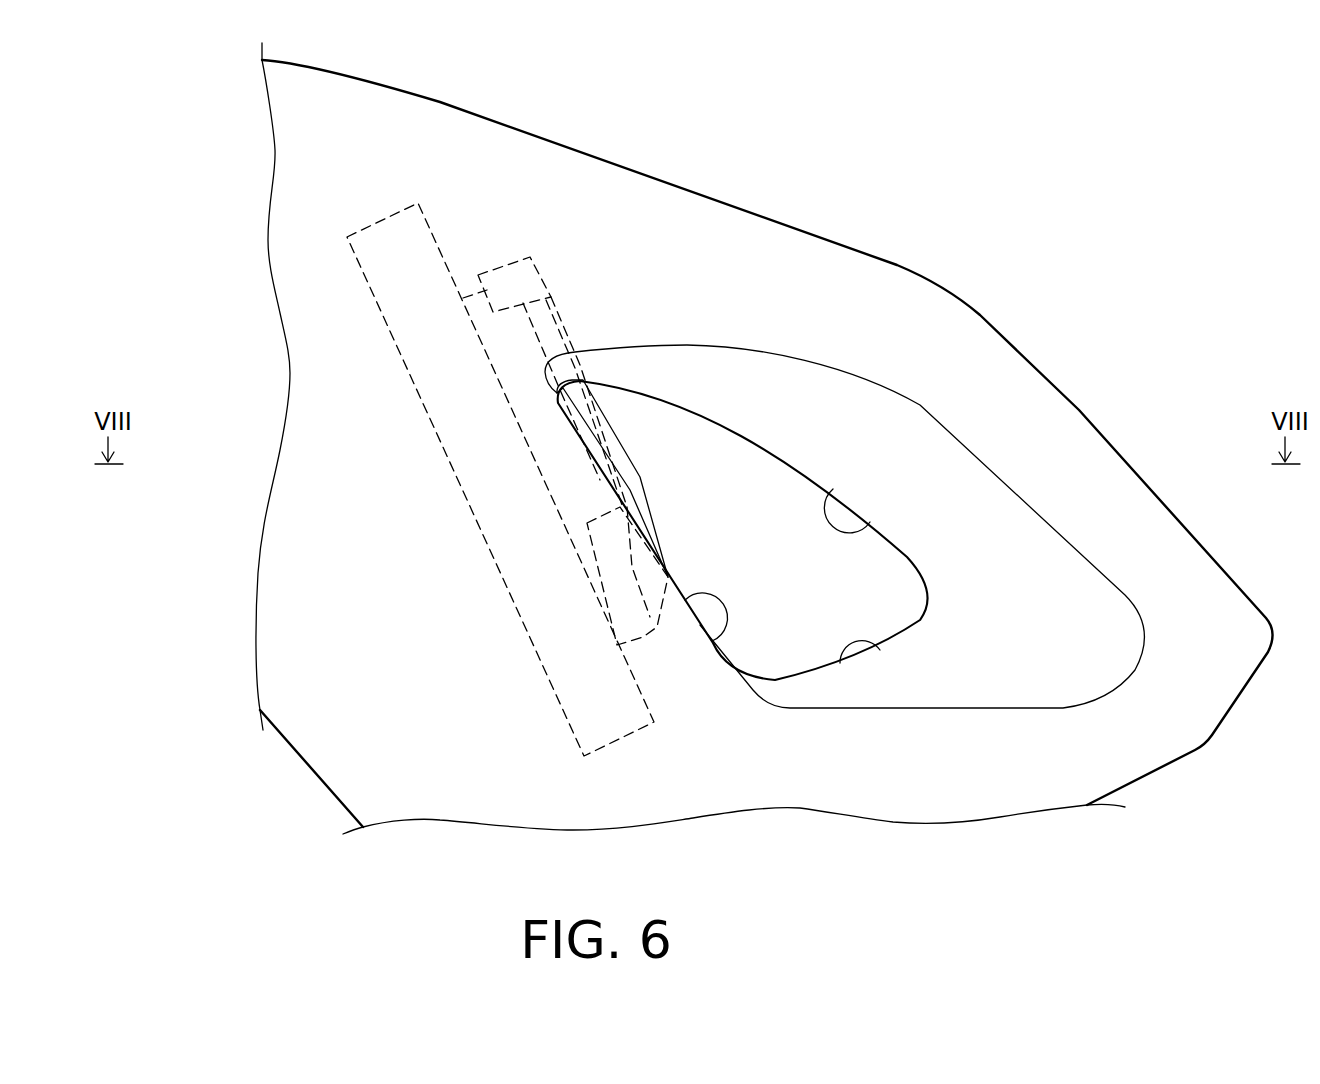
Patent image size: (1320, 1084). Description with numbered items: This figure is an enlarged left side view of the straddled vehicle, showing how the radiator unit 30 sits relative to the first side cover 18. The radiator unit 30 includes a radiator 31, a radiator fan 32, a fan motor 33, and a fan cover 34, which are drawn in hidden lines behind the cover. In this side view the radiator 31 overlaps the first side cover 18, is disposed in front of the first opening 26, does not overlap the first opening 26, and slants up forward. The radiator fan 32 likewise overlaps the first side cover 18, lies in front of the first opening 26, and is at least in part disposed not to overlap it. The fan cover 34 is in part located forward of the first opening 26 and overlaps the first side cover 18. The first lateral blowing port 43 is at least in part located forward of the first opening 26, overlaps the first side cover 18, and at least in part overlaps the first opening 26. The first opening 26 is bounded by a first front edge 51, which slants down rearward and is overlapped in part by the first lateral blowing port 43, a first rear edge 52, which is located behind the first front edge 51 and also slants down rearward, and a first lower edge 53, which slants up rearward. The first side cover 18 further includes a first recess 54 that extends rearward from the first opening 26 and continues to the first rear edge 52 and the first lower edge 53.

The first side cover 18 is at (970, 350).
The first opening 26 is at (888, 568).
The radiator unit 30 is at (463, 565).
The radiator 31 is at (400, 360).
The radiator fan 32 is at (547, 362).
The fan motor 33 is at (617, 418).
The fan cover 34 is at (557, 310).
The first lateral blowing port 43 is at (597, 437).
The first front edge 51 is at (713, 645).
The first rear edge 52 is at (833, 488).
The first lower edge 53 is at (843, 665).
The first recess 54 is at (1030, 600).